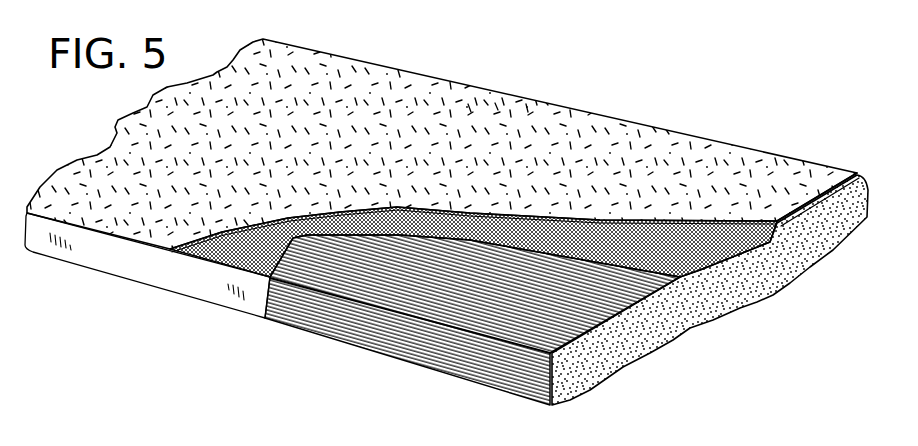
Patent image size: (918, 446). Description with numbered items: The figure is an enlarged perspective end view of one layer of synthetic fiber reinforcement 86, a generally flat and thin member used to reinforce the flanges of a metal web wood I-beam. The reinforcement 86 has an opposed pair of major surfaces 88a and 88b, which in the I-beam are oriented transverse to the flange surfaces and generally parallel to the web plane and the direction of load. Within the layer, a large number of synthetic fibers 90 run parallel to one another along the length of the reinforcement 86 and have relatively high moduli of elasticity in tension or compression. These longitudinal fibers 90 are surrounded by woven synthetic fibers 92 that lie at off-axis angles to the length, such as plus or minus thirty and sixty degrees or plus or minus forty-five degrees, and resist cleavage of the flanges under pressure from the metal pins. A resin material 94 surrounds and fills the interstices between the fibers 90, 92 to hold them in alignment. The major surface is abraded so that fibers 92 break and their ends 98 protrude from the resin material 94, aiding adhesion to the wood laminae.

The synthetic fiber reinforcement 86 is at (390, 70).
The ends 98 is at (470, 108).
The resin material 94 is at (97, 250).
The synthetic fibers 92 is at (222, 265).
The synthetic fibers 90 is at (345, 332).
The major surface 88a is at (745, 160).
The major surface 88b is at (677, 338).